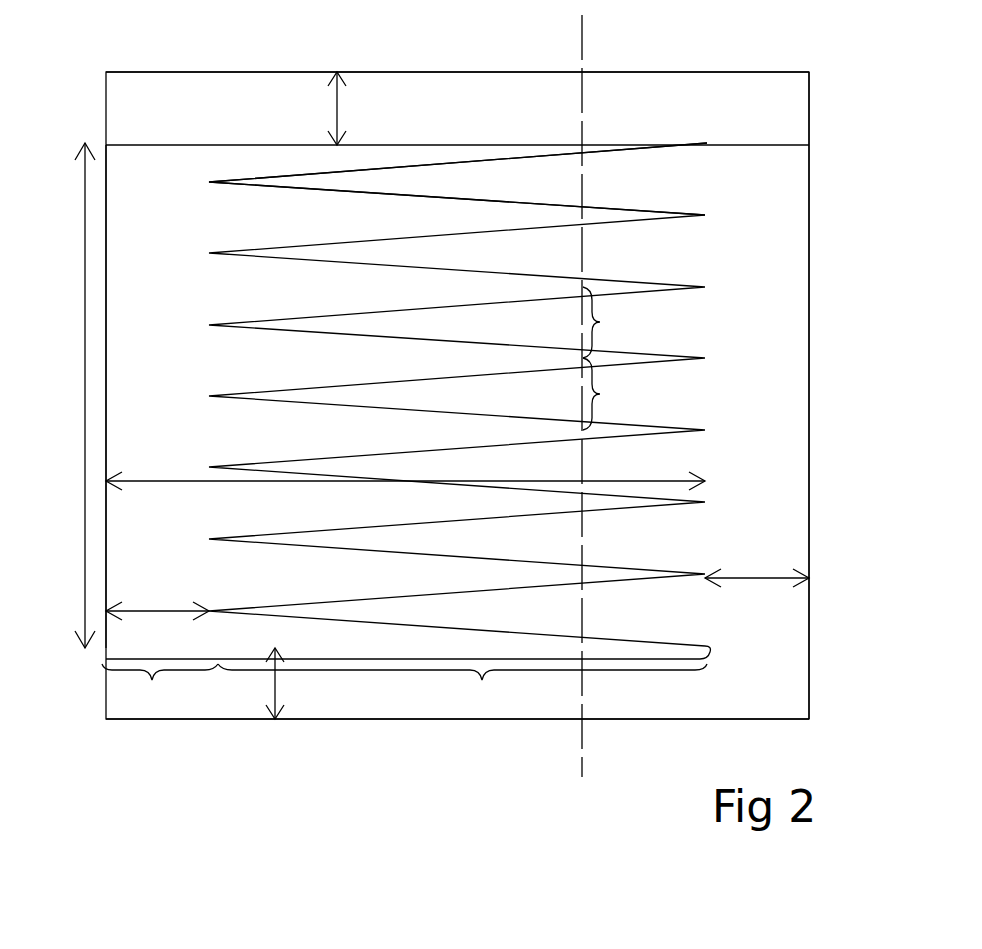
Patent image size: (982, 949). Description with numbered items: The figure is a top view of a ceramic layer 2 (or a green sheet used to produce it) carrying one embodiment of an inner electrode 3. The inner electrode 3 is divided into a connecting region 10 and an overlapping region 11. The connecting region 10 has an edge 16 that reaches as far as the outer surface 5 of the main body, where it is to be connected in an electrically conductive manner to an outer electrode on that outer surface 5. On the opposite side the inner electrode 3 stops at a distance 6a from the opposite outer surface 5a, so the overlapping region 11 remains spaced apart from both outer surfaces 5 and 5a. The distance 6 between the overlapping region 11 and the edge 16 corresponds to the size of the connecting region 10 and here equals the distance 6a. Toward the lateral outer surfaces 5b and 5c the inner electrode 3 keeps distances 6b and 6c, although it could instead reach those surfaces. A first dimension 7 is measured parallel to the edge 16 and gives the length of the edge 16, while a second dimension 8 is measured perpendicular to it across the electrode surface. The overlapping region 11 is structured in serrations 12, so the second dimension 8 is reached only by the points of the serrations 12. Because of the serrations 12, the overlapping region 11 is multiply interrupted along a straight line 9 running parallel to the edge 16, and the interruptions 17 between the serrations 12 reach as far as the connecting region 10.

The ceramic layer 2 is at (650, 95).
The inner electrode 3 is at (243, 165).
The outer surface 5 is at (103, 100).
The opposite outer surface 5a is at (812, 106).
The lateral outer surface 5b is at (225, 722).
The lateral outer surface 5c is at (410, 70).
The distance 6 is at (140, 611).
The distance 6a is at (764, 578).
The distance 6b is at (280, 688).
The distance 6c is at (345, 104).
The first dimension 7 is at (80, 410).
The second dimension 8 is at (185, 481).
The straight line 9 is at (580, 752).
The connecting region 10 is at (160, 691).
The overlapping region 11 is at (408, 682).
The serrations 12 is at (648, 152).
The edge 16 is at (108, 210).
The interruptions 17 is at (611, 358).